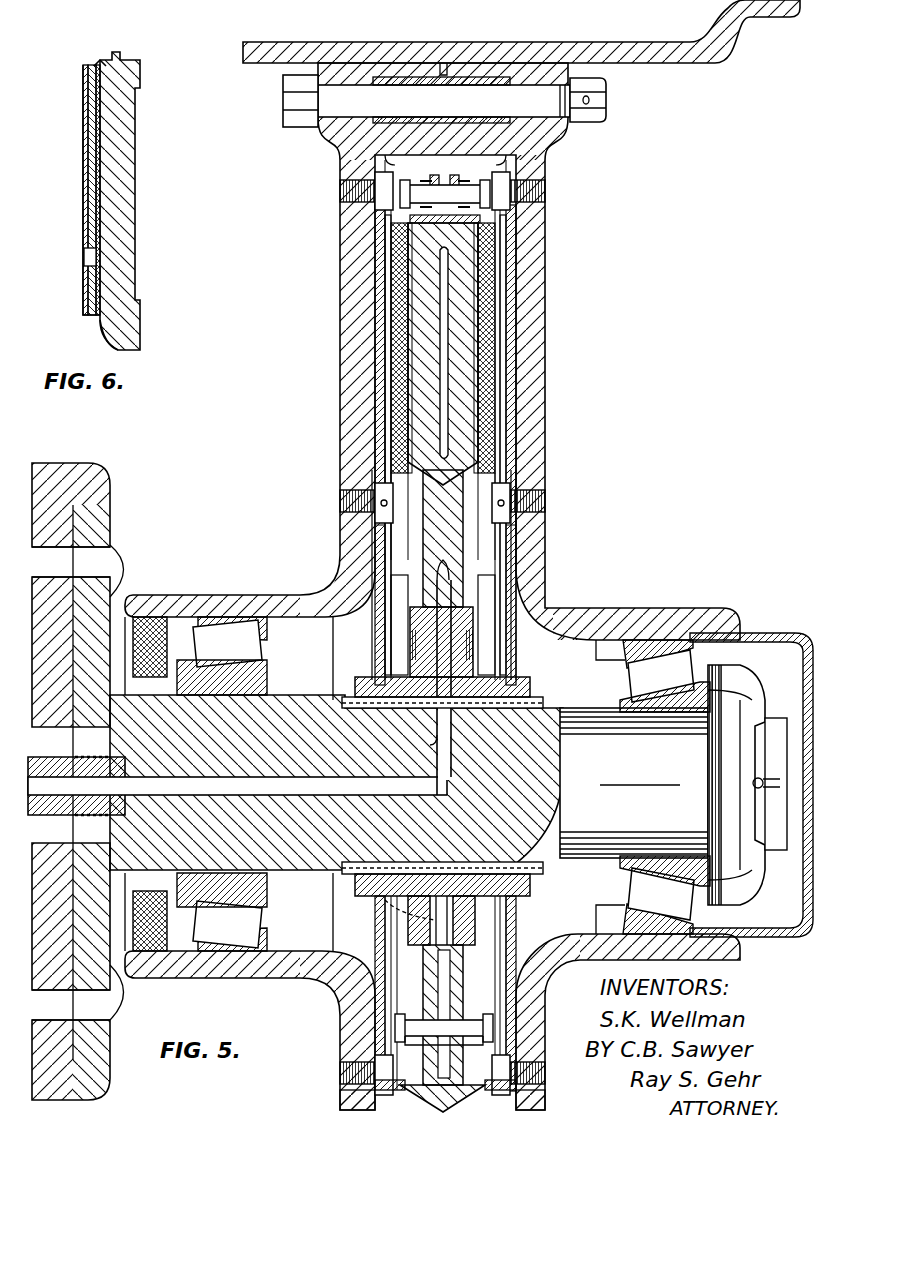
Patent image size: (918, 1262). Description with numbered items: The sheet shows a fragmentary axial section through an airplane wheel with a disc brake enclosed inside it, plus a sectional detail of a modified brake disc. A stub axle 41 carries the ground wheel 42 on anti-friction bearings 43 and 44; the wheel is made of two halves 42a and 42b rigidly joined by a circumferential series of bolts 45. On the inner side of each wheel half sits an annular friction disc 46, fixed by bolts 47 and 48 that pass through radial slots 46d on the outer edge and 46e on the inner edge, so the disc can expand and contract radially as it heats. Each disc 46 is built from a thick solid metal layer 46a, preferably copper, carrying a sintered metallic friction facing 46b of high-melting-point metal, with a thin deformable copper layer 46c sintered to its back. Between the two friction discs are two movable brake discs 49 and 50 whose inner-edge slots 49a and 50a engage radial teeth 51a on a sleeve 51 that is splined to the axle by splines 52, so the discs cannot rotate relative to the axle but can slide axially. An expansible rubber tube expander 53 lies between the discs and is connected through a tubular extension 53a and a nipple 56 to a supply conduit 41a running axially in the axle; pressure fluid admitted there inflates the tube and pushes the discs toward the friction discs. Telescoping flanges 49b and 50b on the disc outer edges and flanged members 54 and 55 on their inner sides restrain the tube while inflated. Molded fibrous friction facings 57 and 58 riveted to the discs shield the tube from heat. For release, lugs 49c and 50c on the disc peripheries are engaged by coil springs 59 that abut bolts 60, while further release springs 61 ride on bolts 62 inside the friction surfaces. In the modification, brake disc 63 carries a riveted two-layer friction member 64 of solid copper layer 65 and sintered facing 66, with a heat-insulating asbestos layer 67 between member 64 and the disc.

In FIG. 5, the stub axle 41 is at (598, 775).
In FIG. 5, the supply conduit 41a is at (310, 805).
In FIG. 5, the ground wheel 42 is at (590, 205).
In FIG. 5, the wheel half 42a is at (340, 283).
In FIG. 5, the wheel half 42b is at (545, 283).
In FIG. 5, the anti-friction bearing 43 is at (262, 657).
In FIG. 5, the anti-friction bearing 44 is at (690, 660).
In FIG. 5, the bolts 45 is at (606, 100).
In FIG. 5, the annular friction disc 46 is at (340, 155).
In FIG. 5, the solid metal layer 46a is at (391, 314).
In FIG. 5, the friction facing 46b is at (391, 340).
In FIG. 5, the deformable metal layer 46c is at (380, 358).
In FIG. 5, the outer radial slots 46d is at (385, 168).
In FIG. 5, the inner radial slots 46e is at (375, 522).
In FIG. 5, the bolts 47 is at (340, 189).
In FIG. 5, the bolts 48 is at (340, 500).
In FIG. 5, the movable brake disc 49 is at (375, 263).
In FIG. 5, the slot 49a is at (385, 915).
In FIG. 5, the telescoping flange 49b is at (385, 233).
In FIG. 5, the lug 49c is at (434, 175).
In FIG. 5, the movable brake disc 50 is at (516, 255).
In FIG. 5, the slot 50a is at (460, 925).
In FIG. 5, the telescoping flange 50b is at (506, 232).
In FIG. 5, the lug 50c is at (456, 175).
In FIG. 5, the sleeve 51 is at (530, 680).
In FIG. 5, the radially extending teeth 51a is at (473, 650).
In FIG. 5, the splines 52 is at (543, 700).
In FIG. 6, the rubber tube expander 53 is at (138, 185).
In FIG. 5, the rubber tube expander 53 is at (545, 380).
In FIG. 5, the tubular extension 53a is at (516, 575).
In FIG. 5, the flanged member 54 is at (375, 1088).
In FIG. 5, the flanged member 55 is at (516, 1088).
In FIG. 5, the nipple 56 is at (430, 712).
In FIG. 5, the friction facing 57 is at (372, 380).
In FIG. 5, the friction facing 58 is at (516, 402).
In FIG. 5, the coil springs 59 is at (412, 180).
In FIG. 5, the bolts 60 is at (395, 205).
In FIG. 5, the release springs 61 is at (395, 1018).
In FIG. 5, the bolts 62 is at (375, 1048).
In FIG. 6, the movable brake disc 63 is at (100, 58).
In FIG. 6, the two-layer friction member 64 is at (84, 64).
In FIG. 6, the solid copper layer 65 is at (90, 190).
In FIG. 6, the sintered facing layer 66 is at (84, 158).
In FIG. 6, the heat-insulating layer 67 is at (97, 222).